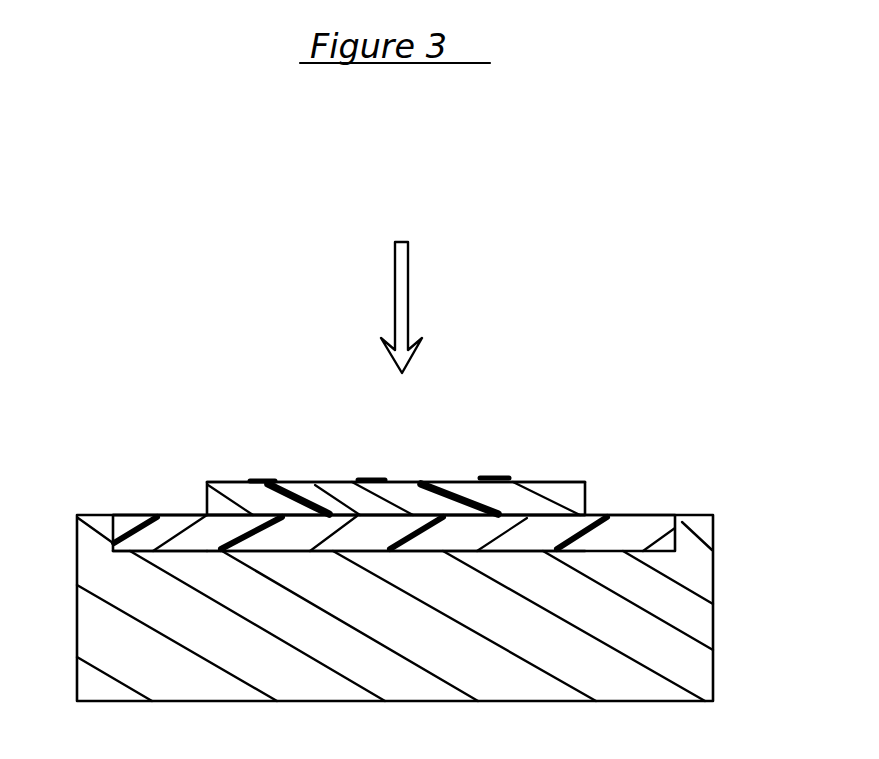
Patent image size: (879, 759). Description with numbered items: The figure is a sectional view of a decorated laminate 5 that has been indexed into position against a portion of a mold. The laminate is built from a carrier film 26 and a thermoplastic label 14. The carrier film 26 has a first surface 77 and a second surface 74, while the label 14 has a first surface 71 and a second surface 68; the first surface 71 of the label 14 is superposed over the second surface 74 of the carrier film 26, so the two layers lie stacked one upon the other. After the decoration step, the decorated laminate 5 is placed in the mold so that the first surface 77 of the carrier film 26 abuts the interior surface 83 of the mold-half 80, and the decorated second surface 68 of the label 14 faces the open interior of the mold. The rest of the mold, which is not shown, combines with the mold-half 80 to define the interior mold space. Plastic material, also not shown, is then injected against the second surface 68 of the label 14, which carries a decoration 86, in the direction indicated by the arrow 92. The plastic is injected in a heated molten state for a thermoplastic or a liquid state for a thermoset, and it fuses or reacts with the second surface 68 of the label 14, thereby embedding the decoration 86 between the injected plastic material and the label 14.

The decorated laminate 5 is at (662, 362).
The thermoplastic label 14 is at (588, 495).
The carrier film 26 is at (637, 525).
The second surface of label 68 is at (415, 482).
The first surface of label 71 is at (300, 517).
The second surface of carrier film 74 is at (128, 515).
The first surface of carrier film 77 is at (177, 551).
The mold-half 80 is at (702, 672).
The interior surface of mold-half 83 is at (412, 551).
The decoration 86 is at (267, 481).
The arrow 92 is at (408, 290).